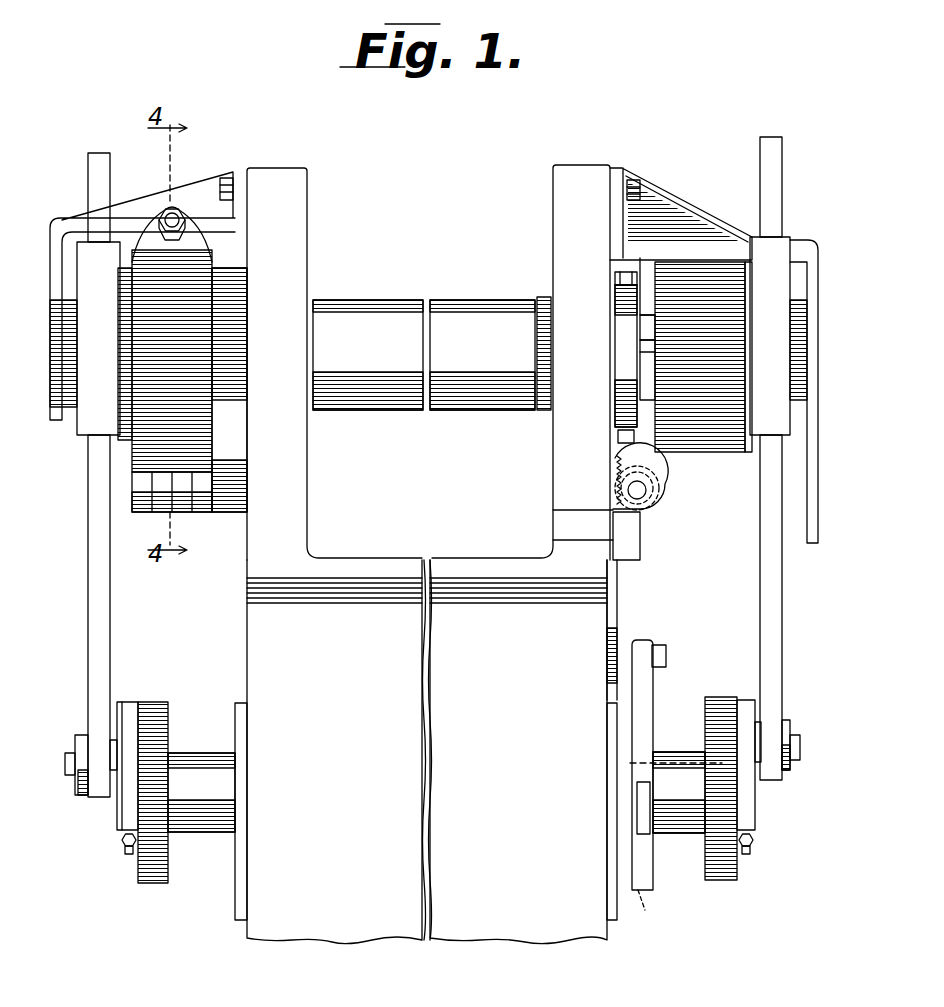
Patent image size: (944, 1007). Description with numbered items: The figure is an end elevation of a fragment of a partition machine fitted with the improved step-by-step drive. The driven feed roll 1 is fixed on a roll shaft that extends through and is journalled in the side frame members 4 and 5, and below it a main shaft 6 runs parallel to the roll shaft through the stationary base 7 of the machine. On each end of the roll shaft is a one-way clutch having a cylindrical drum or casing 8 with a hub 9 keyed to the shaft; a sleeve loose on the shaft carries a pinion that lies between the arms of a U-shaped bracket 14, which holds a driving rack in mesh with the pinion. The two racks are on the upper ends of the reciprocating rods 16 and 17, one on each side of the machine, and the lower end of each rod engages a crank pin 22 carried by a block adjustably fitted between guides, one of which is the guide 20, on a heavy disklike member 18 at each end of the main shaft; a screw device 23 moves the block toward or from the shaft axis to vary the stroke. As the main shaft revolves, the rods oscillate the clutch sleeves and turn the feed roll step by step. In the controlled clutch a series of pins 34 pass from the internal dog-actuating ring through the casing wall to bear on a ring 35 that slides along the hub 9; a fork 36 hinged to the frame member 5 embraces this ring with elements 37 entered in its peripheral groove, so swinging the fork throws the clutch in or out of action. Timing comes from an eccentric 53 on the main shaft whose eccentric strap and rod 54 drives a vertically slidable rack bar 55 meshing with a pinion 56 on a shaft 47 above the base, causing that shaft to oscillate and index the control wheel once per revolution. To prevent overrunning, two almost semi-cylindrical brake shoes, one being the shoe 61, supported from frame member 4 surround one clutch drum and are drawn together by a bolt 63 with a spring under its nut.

The feed roll 1 is at (383, 310).
The side frame member 4 is at (290, 222).
The side frame member 5 is at (556, 204).
The main shaft 6 is at (680, 752).
The stationary base 7 is at (247, 630).
The clutch drum 8 is at (220, 282).
The hub 9 is at (642, 318).
The U-shaped bracket 14 is at (433, 336).
The reciprocating rod 16 is at (778, 602).
The reciprocating rod 17 is at (90, 598).
The disklike member 18 is at (726, 875).
The guide 20 is at (748, 805).
The crank pin 22 is at (760, 735).
The screw device 23 is at (750, 850).
The pins 34 is at (650, 338).
The ring 35 is at (648, 362).
The fork 36 is at (615, 277).
The fork elements 37 is at (626, 318).
The shaft 47 is at (642, 495).
The eccentric 53 is at (656, 905).
The eccentric strap and rod 54 is at (640, 695).
The rack bar 55 is at (617, 477).
The pinion 56 is at (650, 470).
The brake shoe 61 is at (131, 359).
The bolt 63 is at (176, 210).